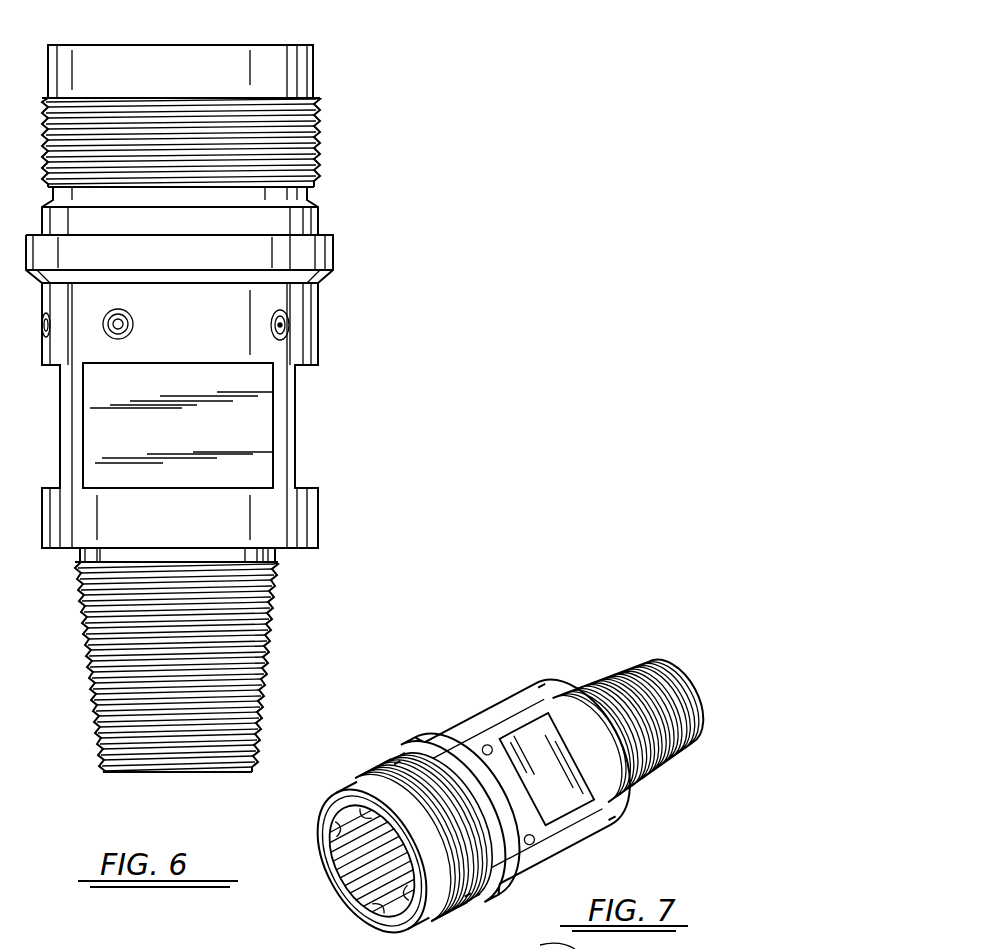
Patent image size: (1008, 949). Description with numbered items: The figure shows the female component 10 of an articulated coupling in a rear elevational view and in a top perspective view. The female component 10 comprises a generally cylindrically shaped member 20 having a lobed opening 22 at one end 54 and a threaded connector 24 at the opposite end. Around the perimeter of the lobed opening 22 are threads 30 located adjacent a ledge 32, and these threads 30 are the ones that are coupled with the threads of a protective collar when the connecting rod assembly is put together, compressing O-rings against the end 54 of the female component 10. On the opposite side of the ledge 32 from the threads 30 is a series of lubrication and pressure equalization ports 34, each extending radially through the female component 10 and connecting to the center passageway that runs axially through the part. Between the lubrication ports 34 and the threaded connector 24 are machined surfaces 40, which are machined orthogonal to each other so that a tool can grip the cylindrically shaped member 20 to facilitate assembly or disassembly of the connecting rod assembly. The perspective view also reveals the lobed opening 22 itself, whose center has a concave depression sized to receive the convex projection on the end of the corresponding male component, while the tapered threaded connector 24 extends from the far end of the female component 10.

In FIG. 6, the female component 10 is at (209, 386).
In FIG. 7, the female component 10 is at (484, 770).
In FIG. 6, the cylindrically shaped member 20 is at (322, 328).
In FIG. 7, the cylindrically shaped member 20 is at (539, 772).
In FIG. 7, the lobed opening 22 is at (350, 895).
In FIG. 6, the threaded connector 24 is at (276, 654).
In FIG. 7, the threaded connector 24 is at (592, 682).
In FIG. 6, the threads 30 is at (320, 144).
In FIG. 7, the threads 30 is at (366, 778).
In FIG. 6, the ledge 32 is at (332, 240).
In FIG. 7, the ledge 32 is at (408, 742).
In FIG. 6, the lubrication and pressure equalization ports 34 is at (126, 312).
In FIG. 6, the machined surfaces 40 is at (180, 455).
In FIG. 7, the machined surfaces 40 is at (492, 710).
In FIG. 6, the end 54 is at (276, 44).
In FIG. 7, the end 54 is at (322, 820).